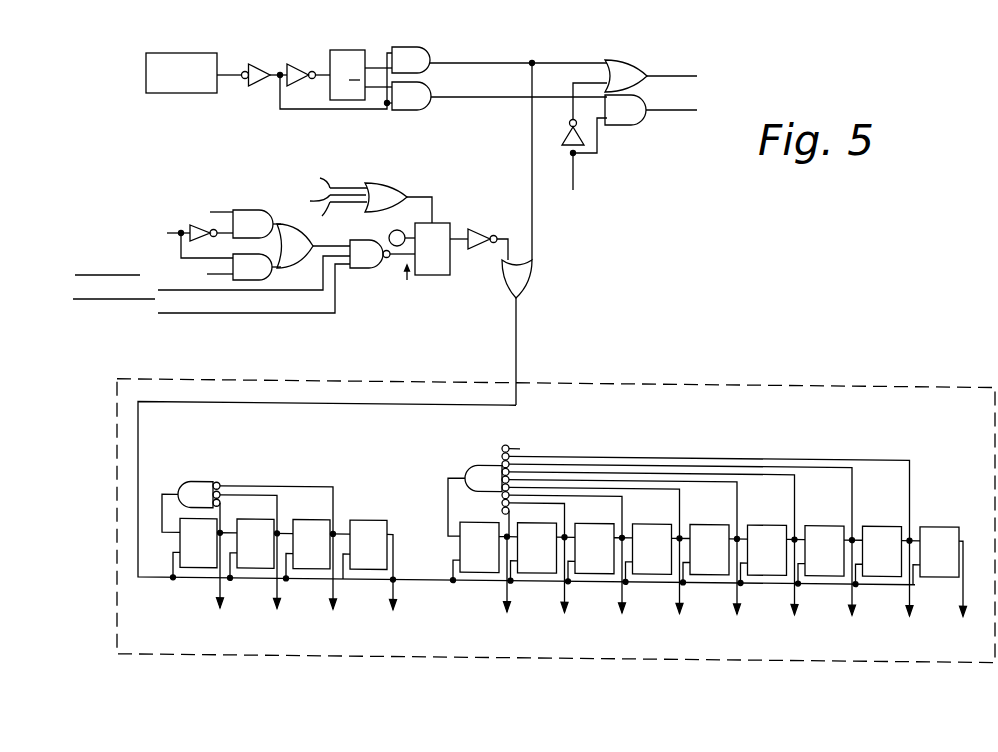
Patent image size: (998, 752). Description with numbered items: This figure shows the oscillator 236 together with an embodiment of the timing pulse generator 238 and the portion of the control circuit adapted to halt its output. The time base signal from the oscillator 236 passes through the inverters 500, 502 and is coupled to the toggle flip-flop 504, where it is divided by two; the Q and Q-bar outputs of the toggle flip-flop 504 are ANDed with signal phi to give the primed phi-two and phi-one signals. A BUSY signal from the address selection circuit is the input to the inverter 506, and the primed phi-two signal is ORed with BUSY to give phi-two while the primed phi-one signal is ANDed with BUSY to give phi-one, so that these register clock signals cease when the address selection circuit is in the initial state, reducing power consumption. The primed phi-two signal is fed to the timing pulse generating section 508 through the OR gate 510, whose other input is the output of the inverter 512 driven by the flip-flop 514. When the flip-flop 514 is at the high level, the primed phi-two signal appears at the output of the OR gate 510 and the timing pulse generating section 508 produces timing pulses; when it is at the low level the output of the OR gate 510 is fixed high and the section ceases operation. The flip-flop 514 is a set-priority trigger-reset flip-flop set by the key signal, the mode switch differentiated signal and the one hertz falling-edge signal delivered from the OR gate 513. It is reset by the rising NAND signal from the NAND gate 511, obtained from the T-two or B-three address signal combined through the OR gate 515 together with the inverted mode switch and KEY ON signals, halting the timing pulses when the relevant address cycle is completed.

The oscillator 236 is at (213, 38).
The inverter 500 is at (261, 63).
The inverter 502 is at (302, 63).
The toggle flip-flop 504 is at (353, 50).
The timing pulse generator 238 is at (658, 48).
The inverter 506 is at (561, 144).
The OR gate 513 is at (392, 184).
The inverter 512 is at (478, 229).
The flip-flop 514 is at (438, 275).
The NAND gate 511 is at (364, 268).
The OR gate 515 is at (291, 268).
The OR gate 510 is at (527, 284).
The timing pulse generating section 508 is at (685, 382).